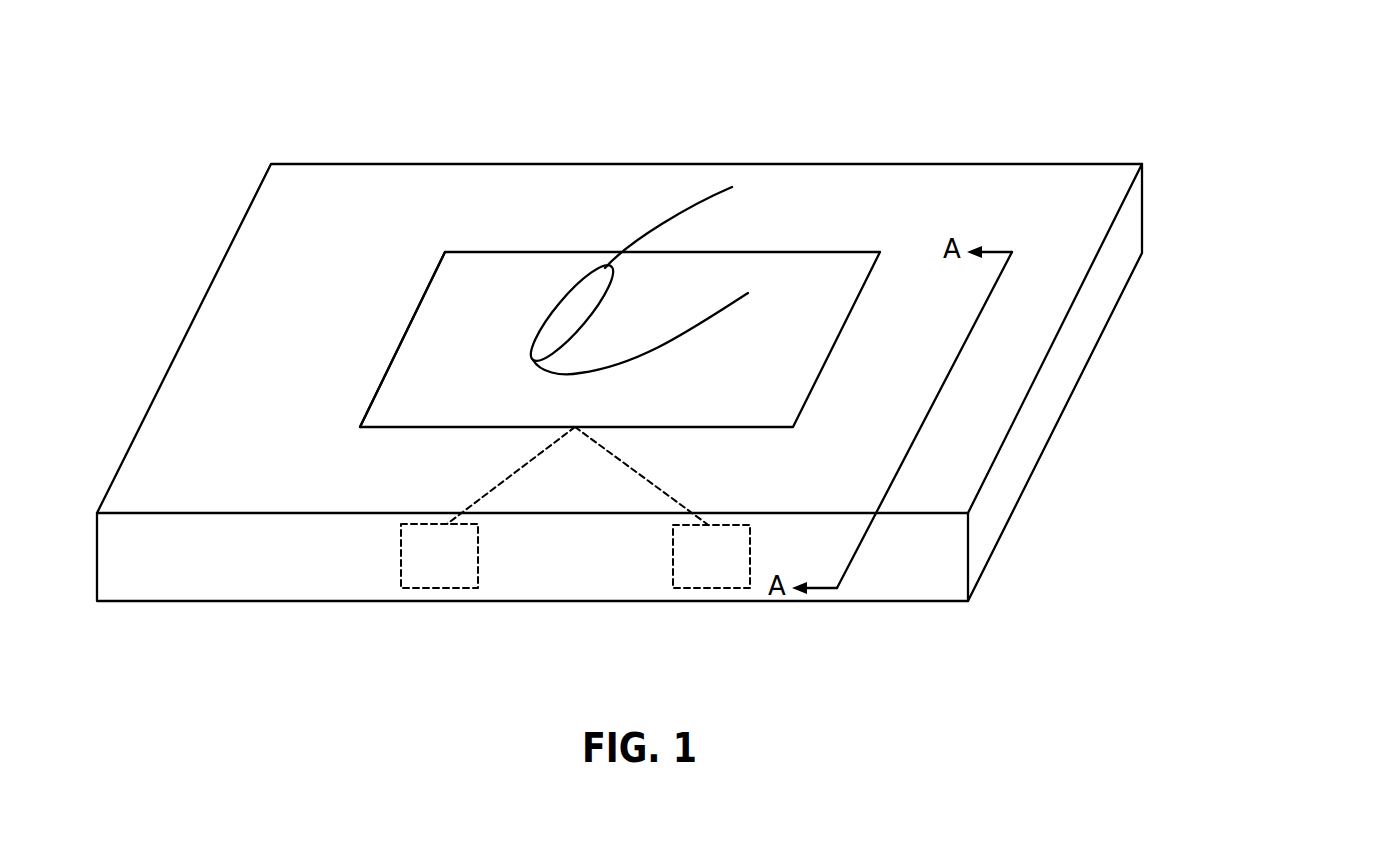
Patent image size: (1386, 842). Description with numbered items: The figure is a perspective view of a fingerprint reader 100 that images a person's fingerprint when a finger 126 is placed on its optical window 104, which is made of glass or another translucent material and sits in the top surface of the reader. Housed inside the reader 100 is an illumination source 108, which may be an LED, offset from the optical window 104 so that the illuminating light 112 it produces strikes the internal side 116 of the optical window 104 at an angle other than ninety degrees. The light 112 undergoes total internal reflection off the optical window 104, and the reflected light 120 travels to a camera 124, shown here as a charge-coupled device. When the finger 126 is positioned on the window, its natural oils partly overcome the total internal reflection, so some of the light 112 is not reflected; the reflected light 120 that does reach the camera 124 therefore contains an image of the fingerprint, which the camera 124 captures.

The fingerprint reader 100 is at (1244, 132).
The optical window 104 is at (847, 320).
The illumination source 108 is at (672, 560).
The illuminating light 112 is at (638, 471).
The internal side 116 is at (382, 427).
The reflected light 120 is at (510, 477).
The camera 124 is at (401, 560).
The finger 126 is at (712, 196).